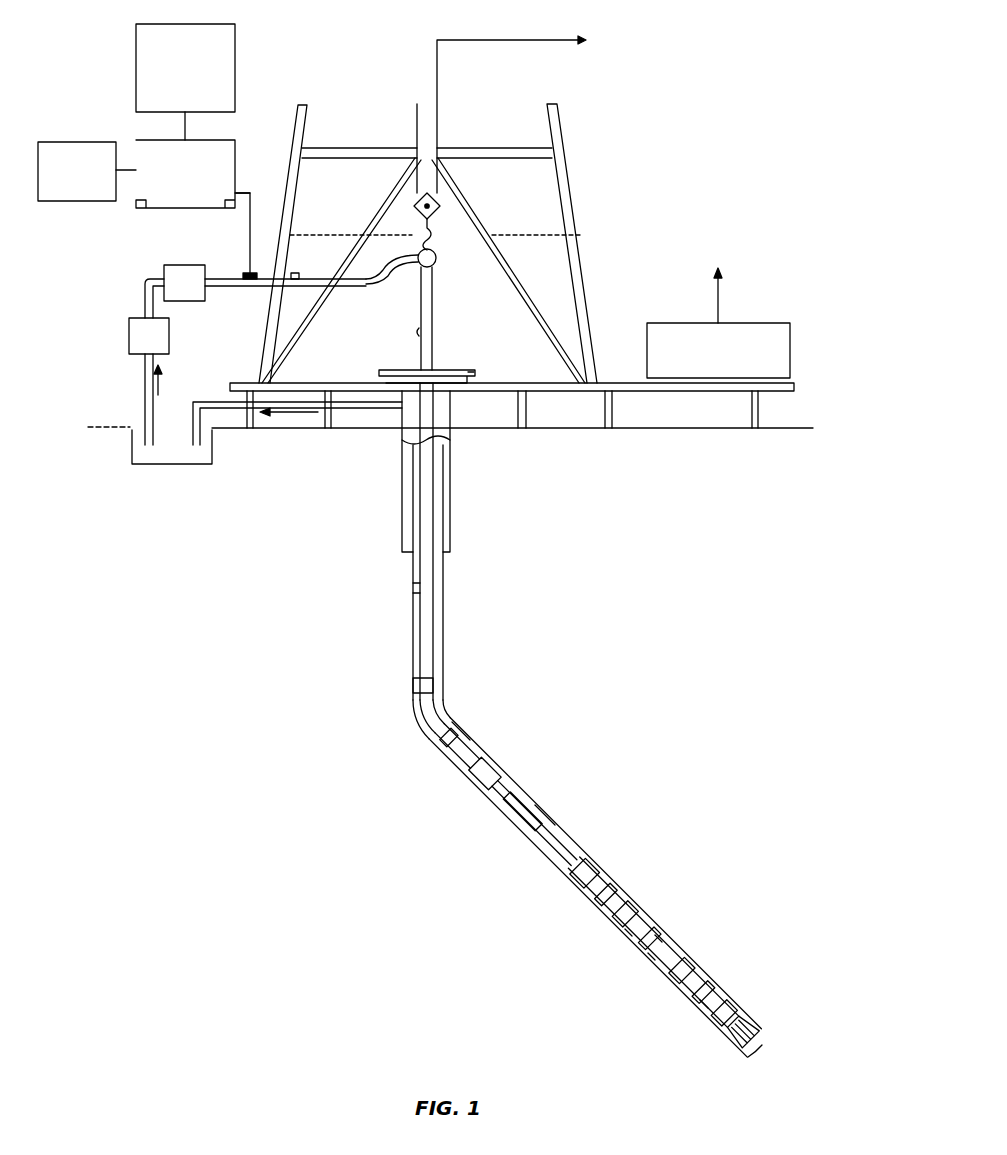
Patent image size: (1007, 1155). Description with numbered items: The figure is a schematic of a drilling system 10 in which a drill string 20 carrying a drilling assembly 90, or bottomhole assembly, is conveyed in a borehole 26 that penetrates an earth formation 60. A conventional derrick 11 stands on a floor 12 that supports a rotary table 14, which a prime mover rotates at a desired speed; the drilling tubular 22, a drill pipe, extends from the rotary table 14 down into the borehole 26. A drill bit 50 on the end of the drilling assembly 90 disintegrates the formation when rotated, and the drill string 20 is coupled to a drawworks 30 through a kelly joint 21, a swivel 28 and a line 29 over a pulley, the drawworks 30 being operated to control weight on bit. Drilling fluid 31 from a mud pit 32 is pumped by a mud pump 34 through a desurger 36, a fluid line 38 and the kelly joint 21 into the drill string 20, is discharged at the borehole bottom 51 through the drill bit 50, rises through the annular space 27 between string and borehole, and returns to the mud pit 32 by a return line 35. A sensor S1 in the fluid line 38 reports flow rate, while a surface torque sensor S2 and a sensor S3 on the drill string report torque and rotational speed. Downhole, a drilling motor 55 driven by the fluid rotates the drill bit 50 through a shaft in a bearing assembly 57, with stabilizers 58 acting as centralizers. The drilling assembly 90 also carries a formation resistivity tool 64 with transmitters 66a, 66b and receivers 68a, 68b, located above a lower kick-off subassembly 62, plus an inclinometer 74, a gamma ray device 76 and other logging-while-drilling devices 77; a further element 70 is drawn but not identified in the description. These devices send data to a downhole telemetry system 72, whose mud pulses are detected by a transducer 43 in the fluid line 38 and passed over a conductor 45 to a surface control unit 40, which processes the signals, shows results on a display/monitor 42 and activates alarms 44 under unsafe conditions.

The drilling system 10 is at (350, 62).
The derrick 11 is at (578, 250).
The floor 12 is at (596, 383).
The rotary table 14 is at (446, 370).
The drill string 20 is at (441, 568).
The kelly joint 21 is at (436, 318).
The drilling tubular 22 is at (405, 612).
The borehole 26 is at (452, 717).
The annular space 27 is at (467, 744).
The swivel 28 is at (413, 270).
The line 29 is at (440, 132).
The drawworks 30 is at (768, 323).
The drilling fluid 31 is at (139, 460).
The mud pit 32 is at (198, 458).
The mud pump 34 is at (129, 335).
The return line 35 is at (372, 404).
The desurger 36 is at (182, 265).
The fluid line 38 is at (258, 288).
The surface control unit 40 is at (162, 140).
The display/monitor 42 is at (188, 24).
The transducer 43 is at (246, 274).
The alarms 44 is at (97, 203).
The conductor 45 is at (246, 193).
The drill bit 50 is at (763, 1022).
The borehole bottom 51 is at (740, 1062).
The drilling motor 55 is at (562, 824).
The bearing assembly 57 is at (695, 1012).
The stabilizers 58 is at (590, 862).
The earth formation 60 is at (277, 788).
The lower kick-off subassembly 62 is at (708, 971).
The formation resistivity tool 64 is at (642, 928).
The transmitter 66a is at (587, 888).
The transmitter 66b is at (653, 940).
The receiver 68a is at (628, 918).
The receiver 68b is at (620, 905).
The drill collar 70 is at (472, 782).
The downhole telemetry system 72 is at (420, 680).
The inclinometer 74 is at (656, 932).
The gamma ray device 76 is at (683, 946).
The logging-while-drilling devices 77 is at (506, 826).
The drilling assembly 90 is at (543, 800).
The sensor S1 is at (297, 273).
The surface torque sensor S2 is at (418, 333).
The sensor S3 is at (468, 372).